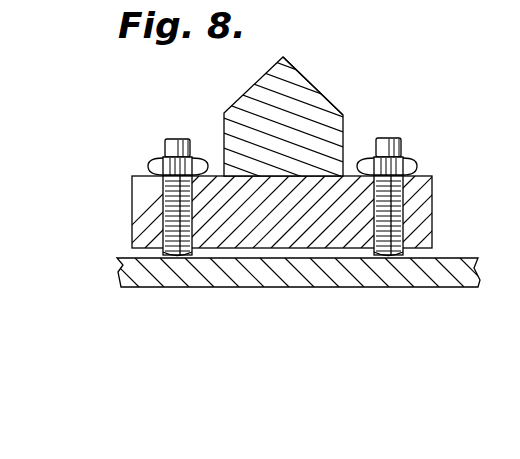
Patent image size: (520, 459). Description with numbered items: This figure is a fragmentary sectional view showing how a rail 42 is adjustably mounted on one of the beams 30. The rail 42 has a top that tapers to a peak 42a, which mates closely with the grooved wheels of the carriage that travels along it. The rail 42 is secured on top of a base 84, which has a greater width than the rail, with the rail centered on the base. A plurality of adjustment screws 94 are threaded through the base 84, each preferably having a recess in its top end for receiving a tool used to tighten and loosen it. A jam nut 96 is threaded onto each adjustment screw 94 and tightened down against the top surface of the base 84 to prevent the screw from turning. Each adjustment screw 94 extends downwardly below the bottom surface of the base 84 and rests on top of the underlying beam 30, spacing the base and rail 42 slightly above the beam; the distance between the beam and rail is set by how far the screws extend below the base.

The beam 30 is at (452, 268).
The base 84 is at (223, 188).
The rail 42 is at (327, 130).
The peak 42a is at (294, 67).
The adjustment screw 94 is at (172, 210).
The jam nut 96 is at (152, 162).